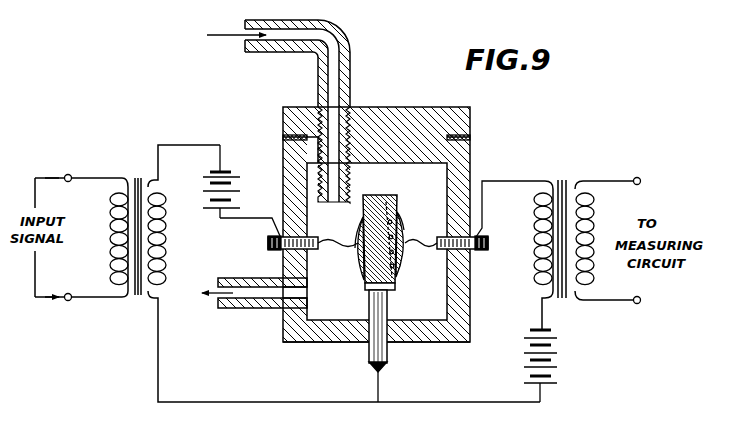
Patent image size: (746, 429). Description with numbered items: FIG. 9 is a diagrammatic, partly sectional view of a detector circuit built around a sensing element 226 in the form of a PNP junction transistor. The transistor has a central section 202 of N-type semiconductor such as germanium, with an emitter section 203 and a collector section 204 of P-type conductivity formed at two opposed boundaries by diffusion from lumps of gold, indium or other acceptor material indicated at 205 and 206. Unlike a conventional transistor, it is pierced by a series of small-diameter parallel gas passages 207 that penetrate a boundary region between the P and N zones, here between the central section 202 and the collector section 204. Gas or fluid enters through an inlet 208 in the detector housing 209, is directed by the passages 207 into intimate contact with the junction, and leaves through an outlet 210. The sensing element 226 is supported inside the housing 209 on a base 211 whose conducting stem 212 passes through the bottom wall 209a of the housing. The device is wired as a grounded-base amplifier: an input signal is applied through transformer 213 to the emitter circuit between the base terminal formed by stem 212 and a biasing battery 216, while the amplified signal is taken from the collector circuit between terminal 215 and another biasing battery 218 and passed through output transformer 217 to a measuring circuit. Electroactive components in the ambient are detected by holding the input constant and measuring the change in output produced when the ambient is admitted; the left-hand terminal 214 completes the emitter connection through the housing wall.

The central section 202 is at (375, 205).
The emitter section 203 is at (358, 263).
The collector section 204 is at (403, 226).
The lump of acceptor type material 205 is at (358, 234).
The lump of acceptor type material 206 is at (398, 250).
The gas passages 207 is at (400, 265).
The inlet 208 is at (350, 62).
The detector housing 209 is at (473, 166).
The bottom wall 209a is at (453, 342).
The outlet 210 is at (255, 309).
The base 211 is at (386, 290).
The stem 212 is at (367, 352).
The transformer 213 is at (133, 165).
The left terminal 214 is at (268, 243).
The terminal 215 is at (474, 252).
The biasing battery 216 is at (233, 173).
The output transformer 217 is at (569, 177).
The biasing battery 218 is at (553, 346).
The sensing element 226 is at (406, 203).